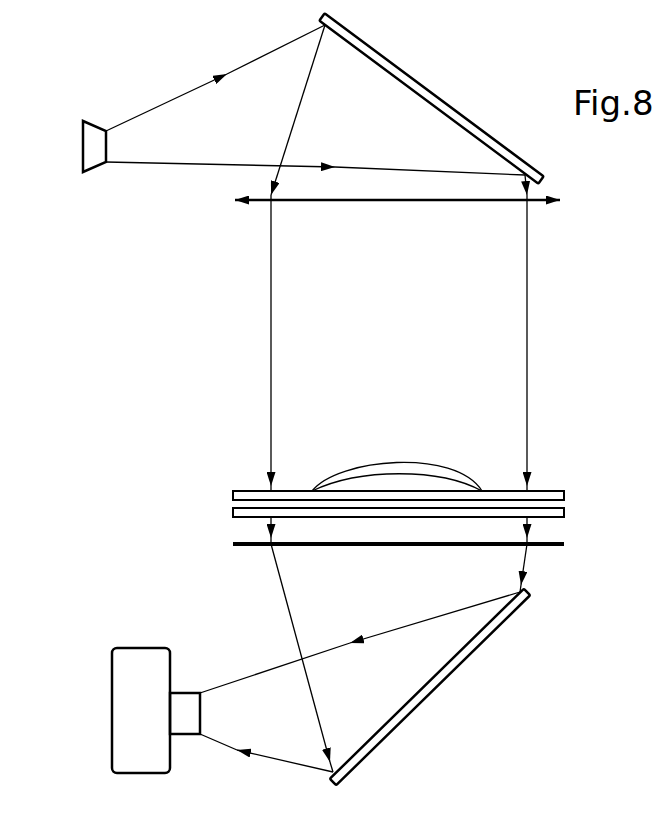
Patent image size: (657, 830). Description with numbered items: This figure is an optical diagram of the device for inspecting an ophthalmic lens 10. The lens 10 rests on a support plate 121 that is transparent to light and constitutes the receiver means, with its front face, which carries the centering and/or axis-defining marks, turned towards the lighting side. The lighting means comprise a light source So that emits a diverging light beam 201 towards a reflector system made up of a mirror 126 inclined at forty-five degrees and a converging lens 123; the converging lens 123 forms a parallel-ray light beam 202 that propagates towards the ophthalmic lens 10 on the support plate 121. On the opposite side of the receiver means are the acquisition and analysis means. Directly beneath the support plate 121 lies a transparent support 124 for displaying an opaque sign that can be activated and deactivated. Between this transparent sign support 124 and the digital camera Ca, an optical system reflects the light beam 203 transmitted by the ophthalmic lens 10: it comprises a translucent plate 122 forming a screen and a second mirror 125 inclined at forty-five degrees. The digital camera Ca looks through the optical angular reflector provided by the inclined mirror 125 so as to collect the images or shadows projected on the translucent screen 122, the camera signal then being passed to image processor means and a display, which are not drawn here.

The light source So is at (97, 163).
The digital camera Ca is at (128, 652).
The diverging light beam 201 is at (162, 115).
The parallel-ray light beam 202 is at (512, 302).
The light beam transmitted by the ophthalmic lens 203 is at (298, 605).
The mirror 126 is at (392, 67).
The mirror 125 is at (487, 642).
The converging lens 123 is at (350, 202).
The ophthalmic lens 10 is at (352, 460).
The support plate 121 is at (550, 488).
The transparent support 124 is at (565, 512).
The translucent plate 122 is at (447, 547).